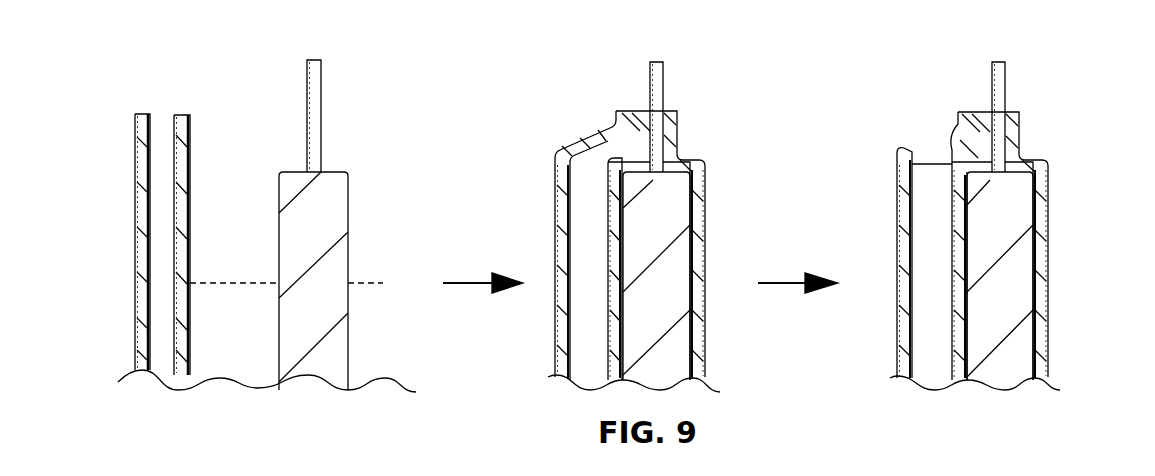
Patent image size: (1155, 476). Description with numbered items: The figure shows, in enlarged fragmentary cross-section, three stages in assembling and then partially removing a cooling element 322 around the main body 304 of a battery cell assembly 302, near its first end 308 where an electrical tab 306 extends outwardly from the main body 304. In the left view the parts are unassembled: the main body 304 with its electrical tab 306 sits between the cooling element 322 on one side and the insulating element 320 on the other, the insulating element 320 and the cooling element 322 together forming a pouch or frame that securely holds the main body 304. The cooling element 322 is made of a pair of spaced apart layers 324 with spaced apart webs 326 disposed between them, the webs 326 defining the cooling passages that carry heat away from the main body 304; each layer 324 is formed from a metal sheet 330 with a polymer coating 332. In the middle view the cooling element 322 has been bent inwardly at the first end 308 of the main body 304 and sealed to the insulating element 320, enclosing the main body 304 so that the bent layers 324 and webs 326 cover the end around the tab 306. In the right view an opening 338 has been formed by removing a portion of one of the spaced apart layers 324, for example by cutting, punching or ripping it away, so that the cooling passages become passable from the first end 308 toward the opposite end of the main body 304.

The battery cell assembly 302 is at (392, 78).
The main body 304 is at (334, 254).
The electrical tab 306 is at (321, 70).
The first end 308 is at (349, 156).
The insulating element 320 is at (403, 138).
The cooling element 322 is at (128, 158).
The spaced apart layers 324 is at (144, 270).
The webs 326 is at (160, 213).
The metal sheet 330 is at (143, 376).
The polymer coating 332 is at (140, 315).
The opening 338 is at (160, 113).